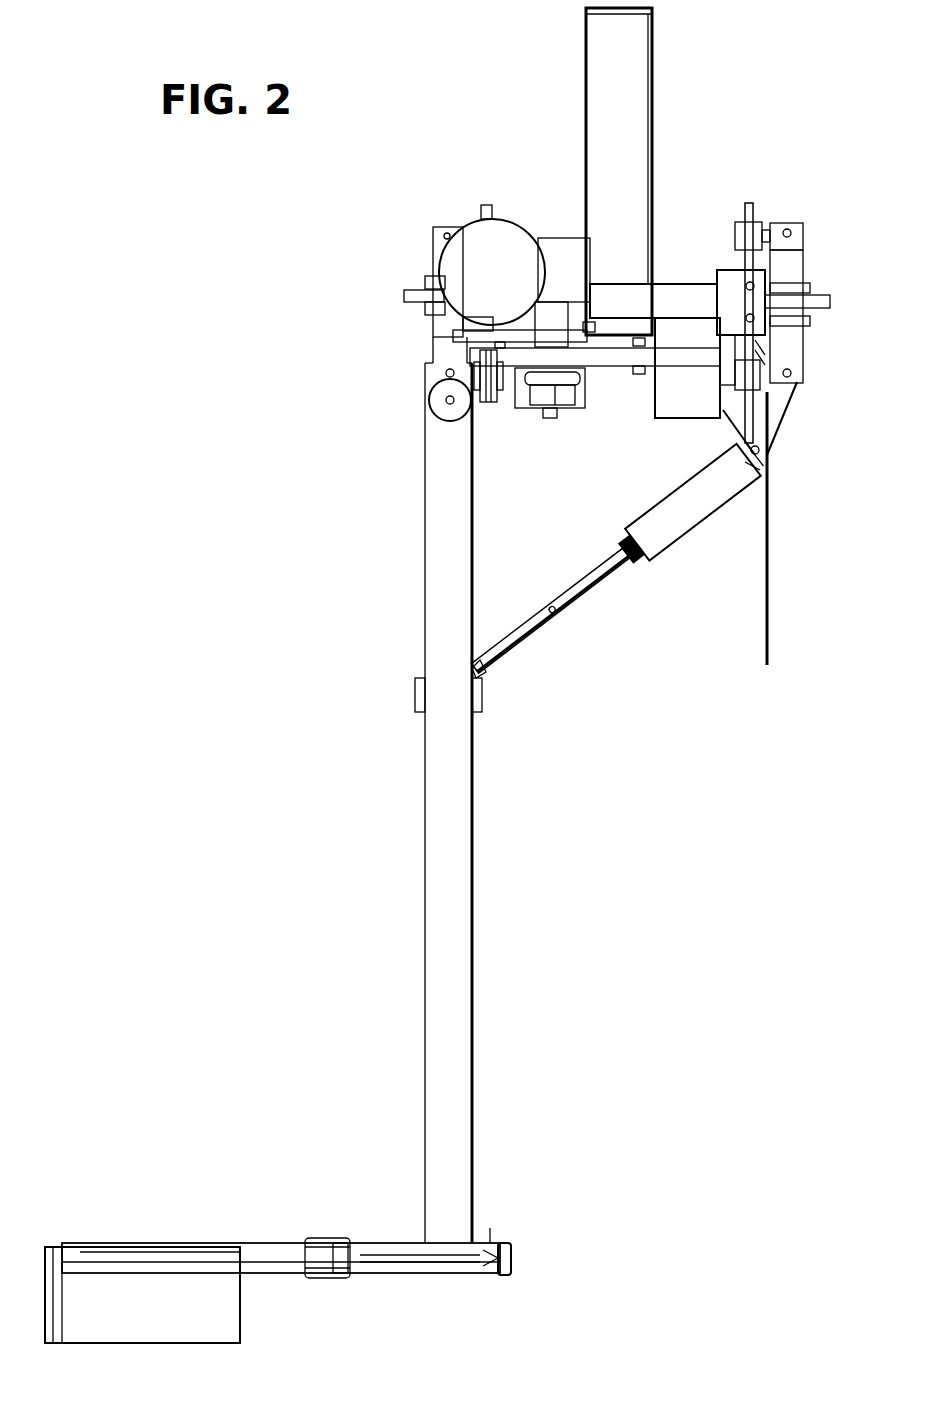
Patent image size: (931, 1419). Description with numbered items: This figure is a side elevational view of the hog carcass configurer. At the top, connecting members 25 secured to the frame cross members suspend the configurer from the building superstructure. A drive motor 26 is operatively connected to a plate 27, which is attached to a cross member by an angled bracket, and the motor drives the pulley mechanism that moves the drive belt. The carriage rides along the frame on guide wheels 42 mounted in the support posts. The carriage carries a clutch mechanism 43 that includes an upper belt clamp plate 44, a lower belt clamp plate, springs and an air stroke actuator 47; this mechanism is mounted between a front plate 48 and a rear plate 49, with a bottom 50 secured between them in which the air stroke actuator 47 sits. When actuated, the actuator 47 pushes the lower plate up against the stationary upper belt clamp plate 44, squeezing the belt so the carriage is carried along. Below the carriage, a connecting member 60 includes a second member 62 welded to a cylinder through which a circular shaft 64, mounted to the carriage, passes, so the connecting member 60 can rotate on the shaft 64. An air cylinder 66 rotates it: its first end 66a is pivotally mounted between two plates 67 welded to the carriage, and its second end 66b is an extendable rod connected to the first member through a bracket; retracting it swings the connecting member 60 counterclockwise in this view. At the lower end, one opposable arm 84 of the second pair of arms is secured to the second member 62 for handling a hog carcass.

The connecting member 25 is at (652, 162).
The drive motor 26 is at (515, 228).
The plate 27 is at (765, 620).
The guide wheel 42 is at (748, 203).
The clutch mechanism 43 is at (490, 402).
The upper belt clamp plate 44 is at (600, 328).
The air stroke actuator 47 is at (555, 400).
The front plate 48 is at (516, 400).
The rear plate 49 is at (585, 390).
The bottom 50 is at (572, 405).
The connecting member 60 is at (499, 733).
The second member 62 is at (455, 878).
The circular shaft 64 is at (437, 401).
The air cylinder 66 is at (640, 542).
The first end 66a is at (752, 480).
The second end 66b is at (498, 662).
The plate 67 is at (740, 415).
The opposable arm 84 is at (272, 1250).